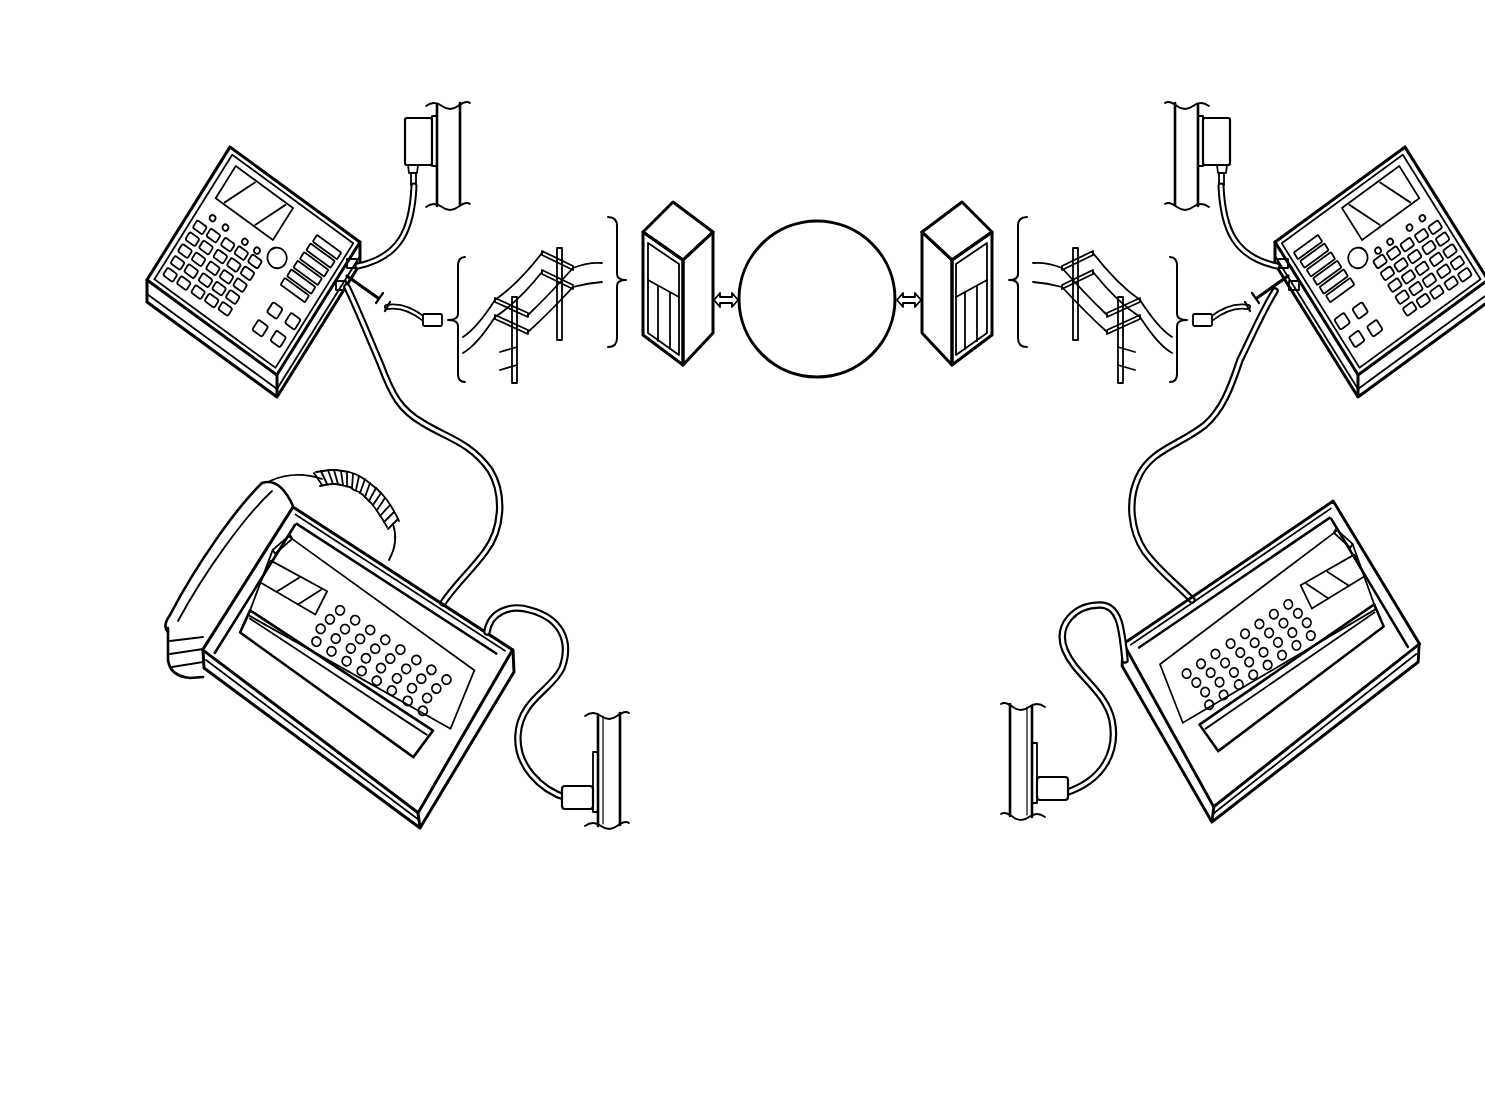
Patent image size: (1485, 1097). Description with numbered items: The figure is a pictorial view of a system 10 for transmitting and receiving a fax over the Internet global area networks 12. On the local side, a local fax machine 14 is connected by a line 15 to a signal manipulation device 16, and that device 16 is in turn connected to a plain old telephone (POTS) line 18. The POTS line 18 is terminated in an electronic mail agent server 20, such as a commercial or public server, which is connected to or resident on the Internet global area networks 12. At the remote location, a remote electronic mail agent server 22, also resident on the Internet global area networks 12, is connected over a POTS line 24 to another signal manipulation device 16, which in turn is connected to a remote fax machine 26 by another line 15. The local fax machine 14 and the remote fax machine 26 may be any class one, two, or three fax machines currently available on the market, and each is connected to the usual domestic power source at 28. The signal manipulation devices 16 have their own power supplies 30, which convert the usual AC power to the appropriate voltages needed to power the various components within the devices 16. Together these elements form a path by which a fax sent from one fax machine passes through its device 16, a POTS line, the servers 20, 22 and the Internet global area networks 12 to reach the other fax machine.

The system 10 is at (827, 528).
The Internet global area networks 12 is at (814, 220).
The local fax machine 14 is at (347, 737).
The line 15 is at (404, 407).
The signal manipulation device 16 is at (216, 157).
The plain old telephone (POTS) line 18 is at (388, 309).
The electronic mail agent server 20 is at (688, 210).
The remote electronic mail agent server 22 is at (952, 203).
The POTS line 24 is at (1240, 304).
The remote fax machine 26 is at (1378, 588).
The domestic power source 28 is at (578, 811).
The power supply 30 is at (404, 137).